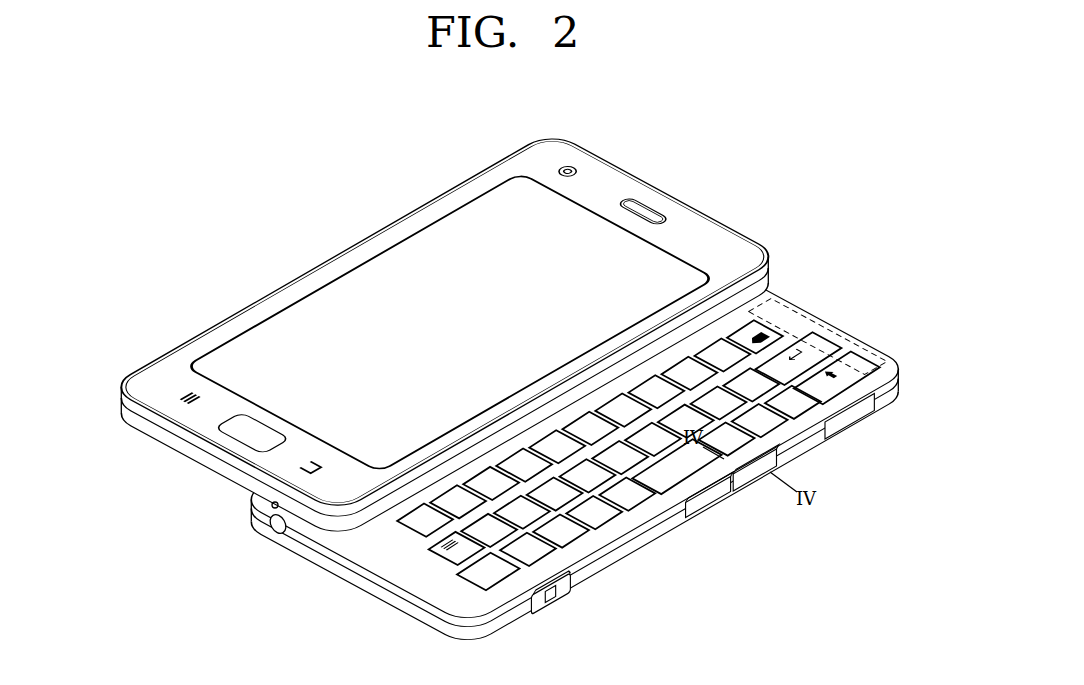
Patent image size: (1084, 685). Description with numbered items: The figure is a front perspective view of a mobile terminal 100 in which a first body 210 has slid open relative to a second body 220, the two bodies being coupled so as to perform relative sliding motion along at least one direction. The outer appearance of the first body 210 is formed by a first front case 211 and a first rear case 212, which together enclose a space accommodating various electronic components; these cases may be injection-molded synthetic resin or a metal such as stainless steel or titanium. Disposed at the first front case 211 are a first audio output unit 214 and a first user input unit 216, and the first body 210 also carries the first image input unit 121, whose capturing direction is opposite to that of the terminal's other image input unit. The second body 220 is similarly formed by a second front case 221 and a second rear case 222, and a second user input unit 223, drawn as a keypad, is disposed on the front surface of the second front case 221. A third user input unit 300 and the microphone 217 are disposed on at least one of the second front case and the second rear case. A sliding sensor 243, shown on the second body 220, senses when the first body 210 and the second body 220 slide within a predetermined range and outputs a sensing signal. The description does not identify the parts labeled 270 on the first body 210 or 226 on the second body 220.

The mobile terminal 100 is at (424, 188).
The first image input unit 121 is at (575, 163).
The first body 210 is at (430, 335).
The first front case 211 is at (157, 425).
The first rear case 212 is at (183, 453).
The first audio output unit 214 is at (647, 210).
The first user input unit 216 is at (255, 445).
The microphone 217 is at (260, 510).
The second body 220 is at (575, 445).
The second front case 221 is at (615, 543).
The second rear case 222 is at (665, 527).
The second user input unit 223 is at (793, 328).
The interface unit 226 is at (850, 413).
The sliding sensor 243 is at (837, 338).
The display unit 270 is at (377, 258).
The third user input unit 300 is at (707, 495).